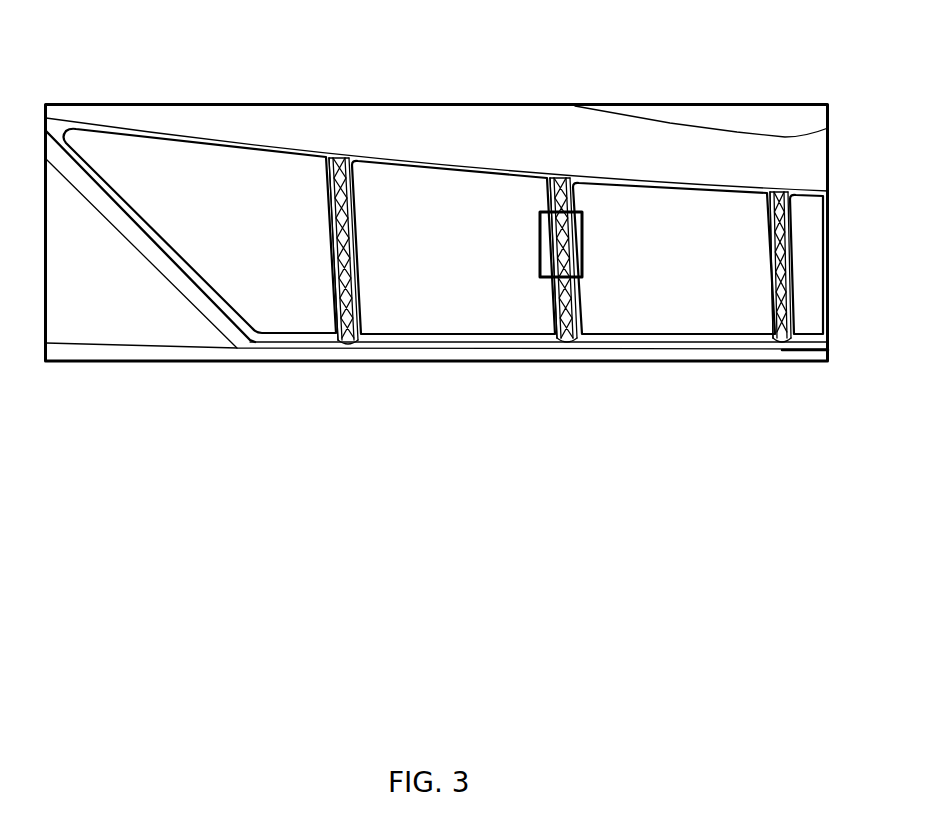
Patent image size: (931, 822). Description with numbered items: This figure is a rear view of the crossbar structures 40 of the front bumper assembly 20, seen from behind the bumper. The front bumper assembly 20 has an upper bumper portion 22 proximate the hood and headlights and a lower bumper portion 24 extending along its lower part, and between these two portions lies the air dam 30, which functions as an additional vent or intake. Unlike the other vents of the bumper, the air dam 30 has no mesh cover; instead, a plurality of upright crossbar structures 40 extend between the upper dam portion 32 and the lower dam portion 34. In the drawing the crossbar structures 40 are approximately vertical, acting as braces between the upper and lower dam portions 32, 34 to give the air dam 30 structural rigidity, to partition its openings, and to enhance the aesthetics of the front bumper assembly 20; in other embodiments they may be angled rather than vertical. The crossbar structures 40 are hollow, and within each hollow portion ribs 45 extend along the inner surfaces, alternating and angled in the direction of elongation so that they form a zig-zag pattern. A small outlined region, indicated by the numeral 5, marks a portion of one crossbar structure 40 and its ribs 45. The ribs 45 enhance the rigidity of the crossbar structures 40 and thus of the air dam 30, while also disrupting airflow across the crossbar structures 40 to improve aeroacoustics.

The detail region 5 is at (582, 228).
The front bumper assembly 20 is at (552, 122).
The upper bumper portion 22 is at (637, 142).
The lower bumper portion 24 is at (640, 348).
The air dam 30 is at (217, 140).
The upper dam portion 32 is at (437, 163).
The lower dam portion 34 is at (275, 333).
The crossbar structure 40 is at (332, 243).
The rib 45 is at (341, 158).